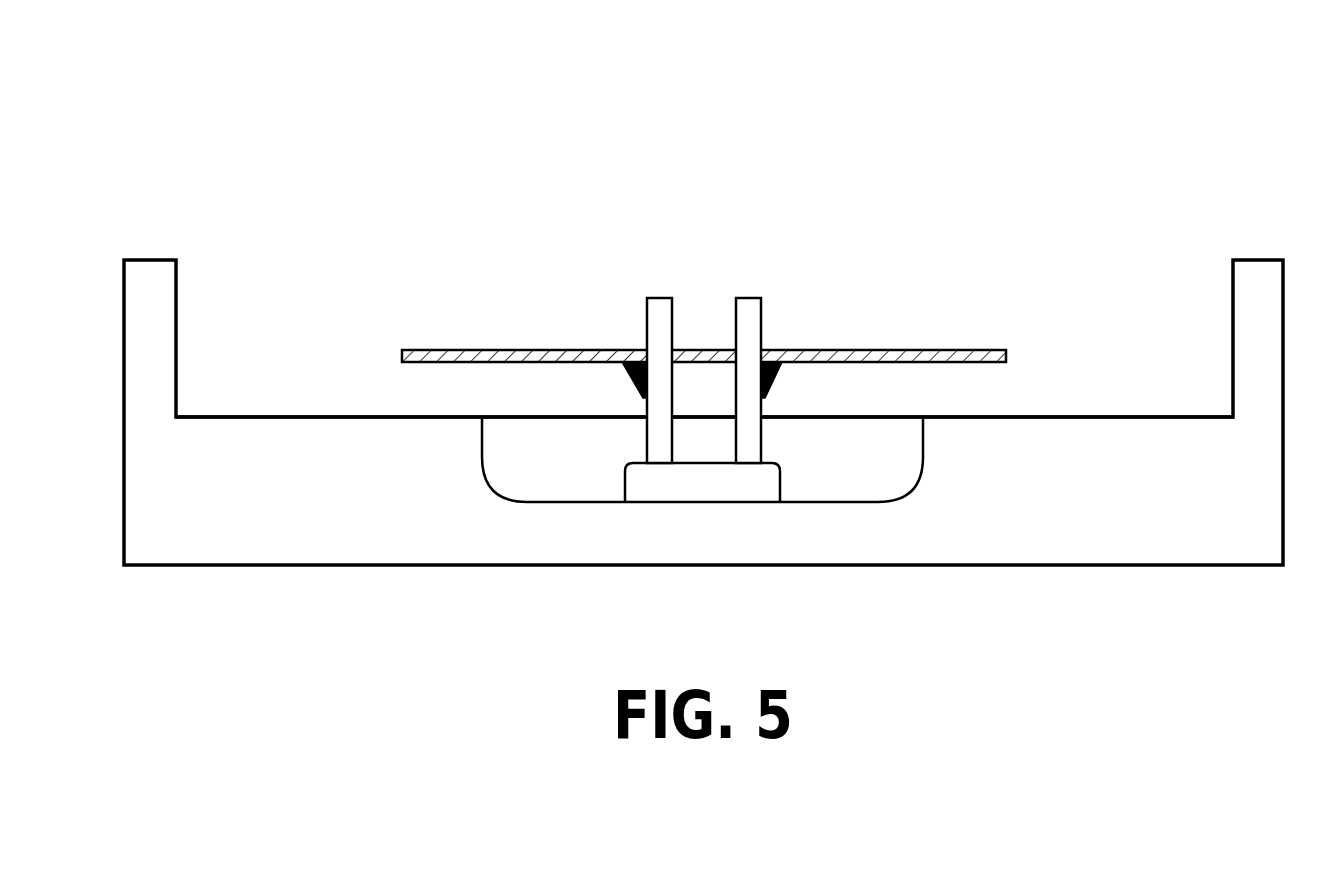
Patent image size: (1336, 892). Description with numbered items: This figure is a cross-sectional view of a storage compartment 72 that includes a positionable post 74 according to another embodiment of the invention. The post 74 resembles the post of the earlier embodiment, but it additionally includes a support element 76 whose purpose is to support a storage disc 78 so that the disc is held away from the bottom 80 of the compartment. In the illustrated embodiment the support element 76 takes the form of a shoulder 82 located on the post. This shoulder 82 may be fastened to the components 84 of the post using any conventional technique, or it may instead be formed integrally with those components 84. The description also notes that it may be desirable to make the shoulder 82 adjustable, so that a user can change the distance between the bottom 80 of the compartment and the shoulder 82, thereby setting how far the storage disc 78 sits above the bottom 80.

The storage compartment 72 is at (274, 590).
The positionable post 74 is at (722, 272).
The support element 76 is at (643, 395).
The storage disc 78 is at (955, 350).
The bottom 80 is at (276, 417).
The shoulder 82 is at (637, 385).
The components 84 is at (660, 298).